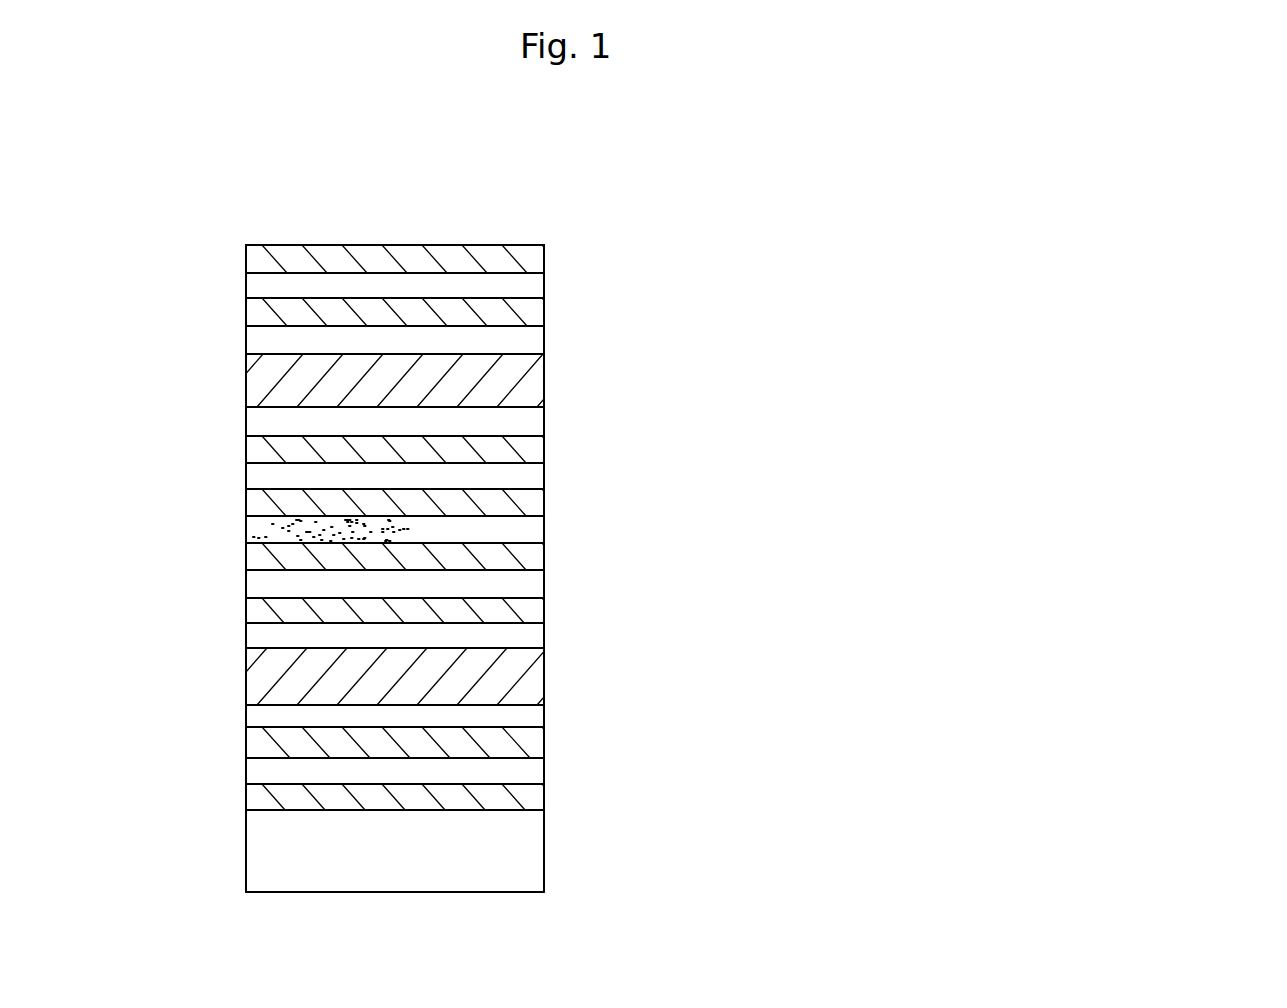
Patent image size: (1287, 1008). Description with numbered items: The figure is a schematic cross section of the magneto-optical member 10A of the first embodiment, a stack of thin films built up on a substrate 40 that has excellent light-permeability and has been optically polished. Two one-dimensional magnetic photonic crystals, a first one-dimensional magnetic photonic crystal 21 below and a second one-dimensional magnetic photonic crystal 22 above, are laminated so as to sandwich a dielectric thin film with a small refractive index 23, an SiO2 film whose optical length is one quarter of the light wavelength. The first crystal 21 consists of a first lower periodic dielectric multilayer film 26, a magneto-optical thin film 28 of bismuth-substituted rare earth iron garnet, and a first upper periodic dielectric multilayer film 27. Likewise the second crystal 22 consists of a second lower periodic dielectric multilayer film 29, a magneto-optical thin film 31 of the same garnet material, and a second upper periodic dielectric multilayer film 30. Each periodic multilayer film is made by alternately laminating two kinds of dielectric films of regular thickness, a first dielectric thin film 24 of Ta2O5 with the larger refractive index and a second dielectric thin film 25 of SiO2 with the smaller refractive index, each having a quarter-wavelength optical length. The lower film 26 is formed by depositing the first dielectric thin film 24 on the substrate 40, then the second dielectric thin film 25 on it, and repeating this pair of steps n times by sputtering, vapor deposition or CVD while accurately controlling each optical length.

The magneto-optical member 10A is at (580, 206).
The first one-dimensional magnetic photonic crystal 21 is at (753, 797).
The second one-dimensional magnetic photonic crystal 22 is at (753, 493).
The dielectric thin film with a small refractive index 23 is at (748, 526).
The first dielectric thin film 24 is at (318, 305).
The second dielectric thin film 25 is at (258, 338).
The first lower periodic dielectric multilayer film 26 is at (553, 705).
The first upper periodic dielectric multilayer film 27 is at (553, 540).
The magneto-optical thin film 28 is at (479, 671).
The second lower periodic dielectric multilayer film 29 is at (553, 408).
The second upper periodic dielectric multilayer film 30 is at (553, 245).
The magneto-optical thin film 31 is at (479, 372).
The substrate 40 is at (431, 851).